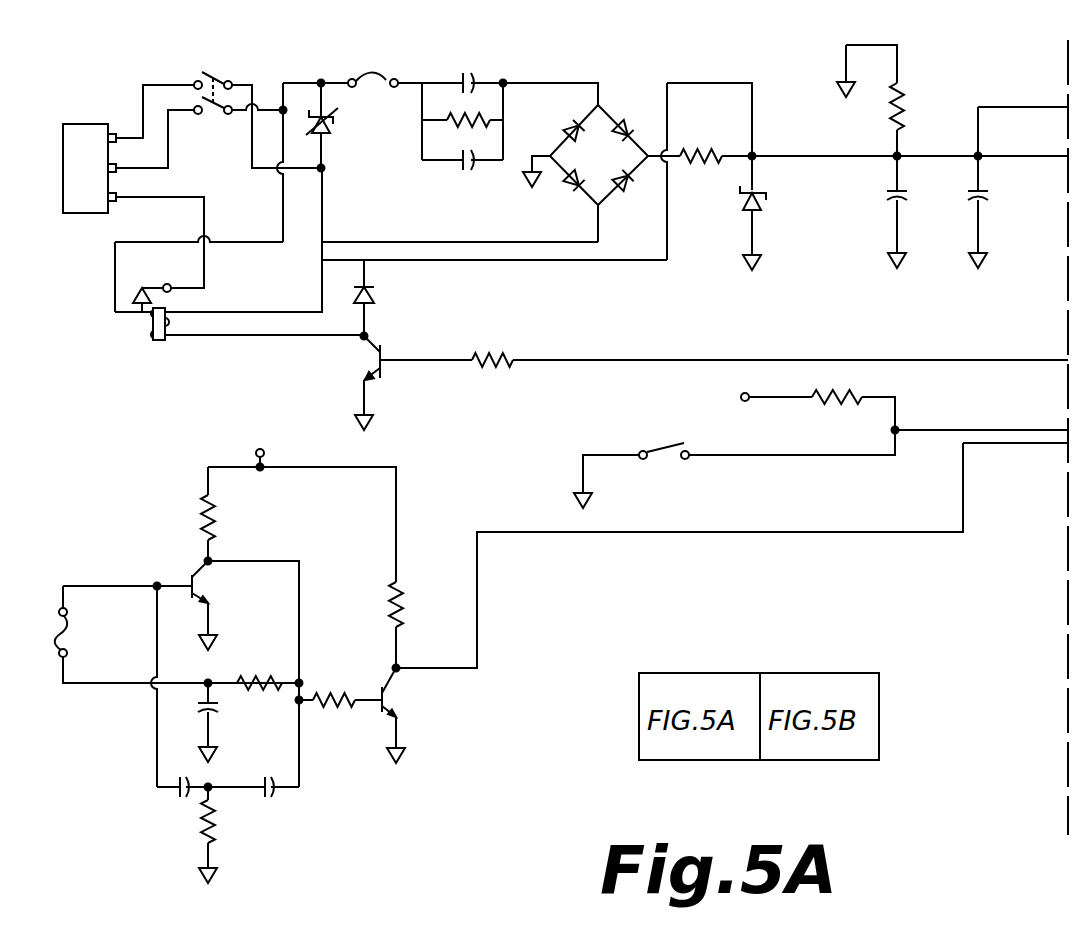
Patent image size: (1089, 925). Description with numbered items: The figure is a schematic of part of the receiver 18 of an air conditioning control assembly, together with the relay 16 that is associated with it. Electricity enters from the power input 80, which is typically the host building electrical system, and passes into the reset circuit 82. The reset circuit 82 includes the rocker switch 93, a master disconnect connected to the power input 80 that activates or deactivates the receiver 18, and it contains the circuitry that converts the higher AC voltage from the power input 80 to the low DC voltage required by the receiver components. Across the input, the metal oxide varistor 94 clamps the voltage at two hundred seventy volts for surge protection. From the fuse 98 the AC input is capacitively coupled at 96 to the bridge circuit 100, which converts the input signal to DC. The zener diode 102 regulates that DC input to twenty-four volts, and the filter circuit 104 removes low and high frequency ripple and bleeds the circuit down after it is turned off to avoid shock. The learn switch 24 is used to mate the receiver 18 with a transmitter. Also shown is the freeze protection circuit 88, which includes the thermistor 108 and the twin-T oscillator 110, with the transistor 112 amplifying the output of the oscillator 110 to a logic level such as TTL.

The power input 80 is at (73, 124).
The rocker switch 93 is at (214, 75).
The reset circuit 82 is at (341, 73).
The fuse 98 is at (372, 74).
The metal oxide varistor 94 is at (331, 125).
The capacitive coupling 96 is at (503, 82).
The receiver 18 is at (551, 80).
The bridge circuit 100 is at (609, 110).
The zener diode 102 is at (763, 199).
The filter circuit 104 is at (934, 116).
The relay 16 is at (142, 332).
The learn switch 24 is at (667, 431).
The freeze protection circuit 88 is at (138, 523).
The thermistor 108 is at (70, 618).
The twin-T oscillator 110 is at (135, 764).
The transistor 112 is at (380, 708).